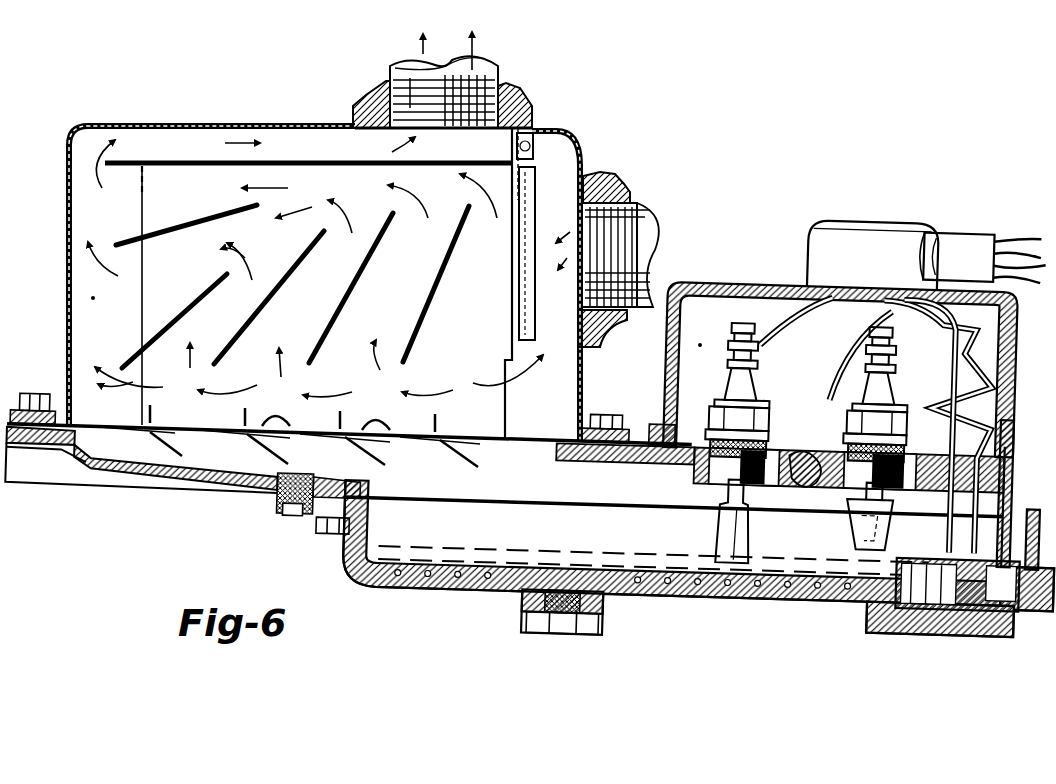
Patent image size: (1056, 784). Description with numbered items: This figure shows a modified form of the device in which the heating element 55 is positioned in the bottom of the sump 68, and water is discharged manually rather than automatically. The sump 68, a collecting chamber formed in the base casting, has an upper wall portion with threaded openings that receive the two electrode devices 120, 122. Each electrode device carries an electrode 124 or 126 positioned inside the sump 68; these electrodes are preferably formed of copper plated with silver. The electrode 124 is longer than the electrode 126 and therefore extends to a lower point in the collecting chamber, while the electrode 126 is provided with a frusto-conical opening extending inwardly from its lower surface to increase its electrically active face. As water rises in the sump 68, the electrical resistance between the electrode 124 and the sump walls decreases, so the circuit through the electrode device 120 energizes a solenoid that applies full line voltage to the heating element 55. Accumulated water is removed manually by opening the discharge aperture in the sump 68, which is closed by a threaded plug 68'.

The heating element 55 is at (430, 562).
The sump 68 is at (316, 528).
The threaded plug 68' is at (531, 627).
The electrode device 120 is at (760, 383).
The electrode device 122 is at (885, 380).
The electrode 124 is at (722, 521).
The electrode 126 is at (850, 517).